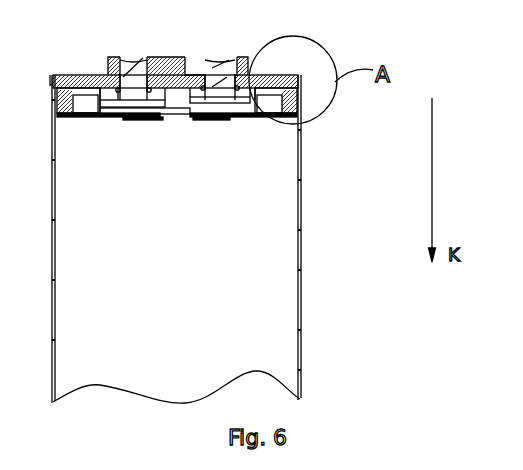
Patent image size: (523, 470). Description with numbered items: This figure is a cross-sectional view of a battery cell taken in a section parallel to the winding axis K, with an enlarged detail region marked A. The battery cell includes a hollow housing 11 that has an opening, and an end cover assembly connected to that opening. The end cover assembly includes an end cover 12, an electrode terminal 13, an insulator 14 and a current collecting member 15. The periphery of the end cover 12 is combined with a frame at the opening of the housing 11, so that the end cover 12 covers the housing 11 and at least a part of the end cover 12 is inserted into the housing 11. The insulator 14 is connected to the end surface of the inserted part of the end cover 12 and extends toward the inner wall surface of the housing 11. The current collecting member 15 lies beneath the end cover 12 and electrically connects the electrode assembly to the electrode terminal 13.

The housing 11 is at (301, 270).
The end cover 12 is at (273, 75).
The electrode terminal 13 is at (133, 59).
The insulator 14 is at (286, 110).
The current collecting member 15 is at (186, 64).